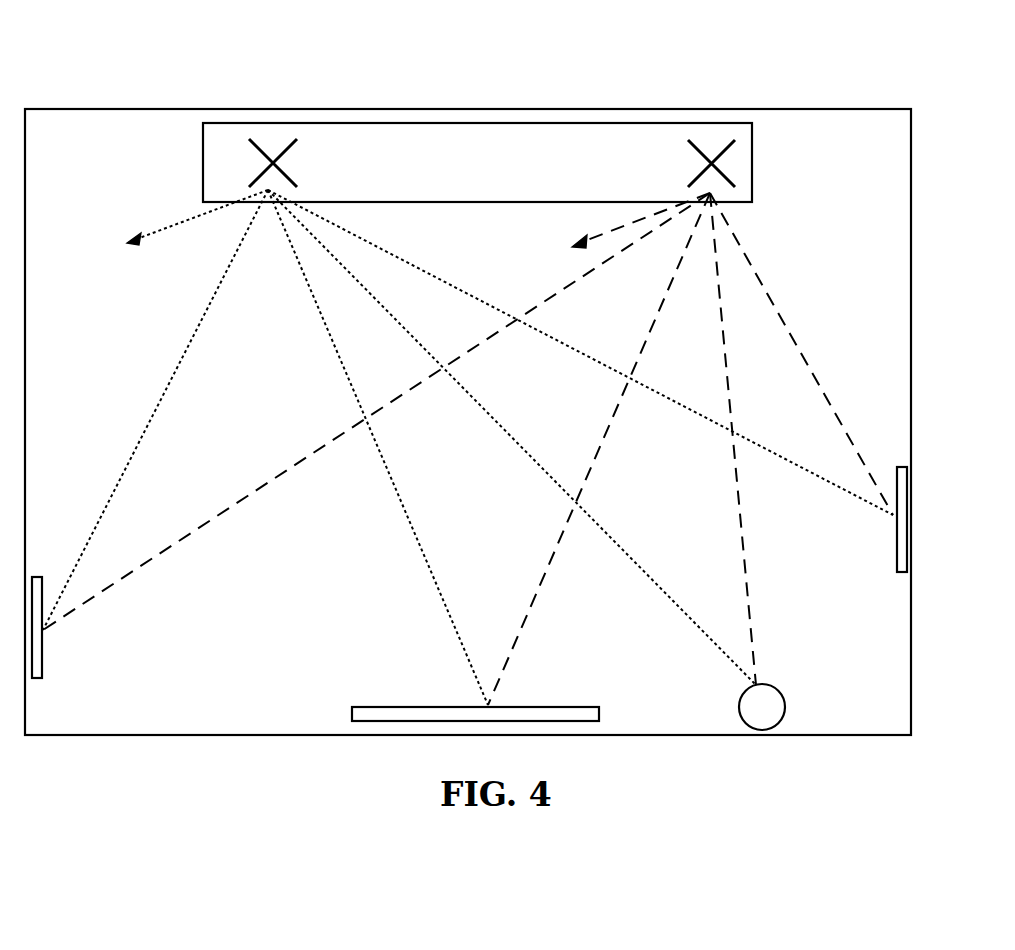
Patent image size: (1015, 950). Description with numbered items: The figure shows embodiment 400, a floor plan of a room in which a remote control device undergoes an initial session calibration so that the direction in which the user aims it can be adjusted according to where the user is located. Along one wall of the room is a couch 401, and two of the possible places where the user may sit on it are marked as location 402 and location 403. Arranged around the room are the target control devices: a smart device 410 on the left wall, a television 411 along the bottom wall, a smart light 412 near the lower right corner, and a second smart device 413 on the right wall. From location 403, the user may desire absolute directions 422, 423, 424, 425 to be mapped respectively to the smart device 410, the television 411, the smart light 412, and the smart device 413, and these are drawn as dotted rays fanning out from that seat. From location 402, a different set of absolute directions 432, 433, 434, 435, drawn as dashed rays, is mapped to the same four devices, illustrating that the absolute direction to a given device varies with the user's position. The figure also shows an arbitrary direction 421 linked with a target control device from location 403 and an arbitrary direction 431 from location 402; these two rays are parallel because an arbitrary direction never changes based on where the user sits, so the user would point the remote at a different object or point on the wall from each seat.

The embodiment 400 is at (934, 72).
The couch 401 is at (754, 133).
The location 402 is at (726, 178).
The location 403 is at (298, 170).
The smart device 410 is at (42, 665).
The television 411 is at (599, 711).
The smart light 412 is at (785, 702).
The smart device 413 is at (897, 567).
The arbitrary direction 421 is at (172, 224).
The absolute direction 422 is at (172, 378).
The absolute direction 423 is at (405, 503).
The absolute direction 424 is at (506, 430).
The absolute direction 425 is at (457, 286).
The arbitrary direction 431 is at (588, 236).
The absolute direction 432 is at (243, 504).
The absolute direction 433 is at (647, 343).
The absolute direction 434 is at (730, 374).
The absolute direction 435 is at (762, 275).